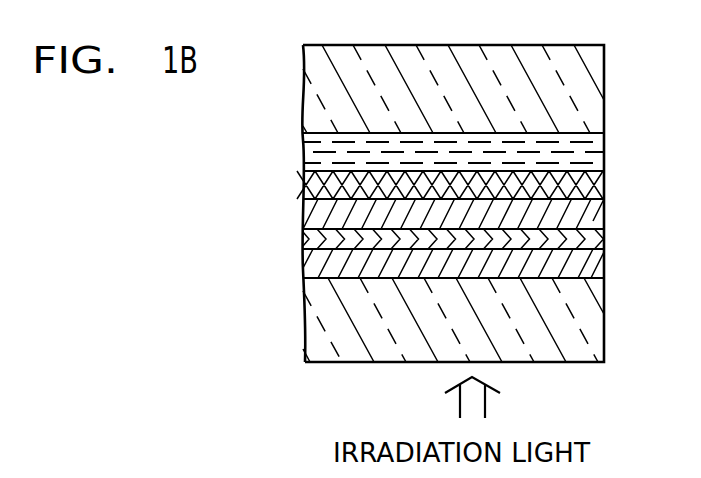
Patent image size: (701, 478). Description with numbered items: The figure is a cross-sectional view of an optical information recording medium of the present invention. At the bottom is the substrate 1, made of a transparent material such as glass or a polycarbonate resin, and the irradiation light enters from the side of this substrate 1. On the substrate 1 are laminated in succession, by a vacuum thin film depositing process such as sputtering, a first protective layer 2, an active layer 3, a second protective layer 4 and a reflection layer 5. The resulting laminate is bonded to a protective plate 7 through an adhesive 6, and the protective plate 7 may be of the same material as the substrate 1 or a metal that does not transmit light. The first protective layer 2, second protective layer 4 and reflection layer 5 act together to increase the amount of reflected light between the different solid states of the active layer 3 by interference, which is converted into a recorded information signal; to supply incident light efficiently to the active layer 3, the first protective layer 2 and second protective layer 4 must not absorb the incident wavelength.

The substrate 1 is at (582, 315).
The first protective layer 2 is at (594, 266).
The active layer 3 is at (597, 238).
The second protective layer 4 is at (584, 218).
The reflection layer 5 is at (588, 186).
The adhesive 6 is at (587, 147).
The protective plate 7 is at (588, 97).